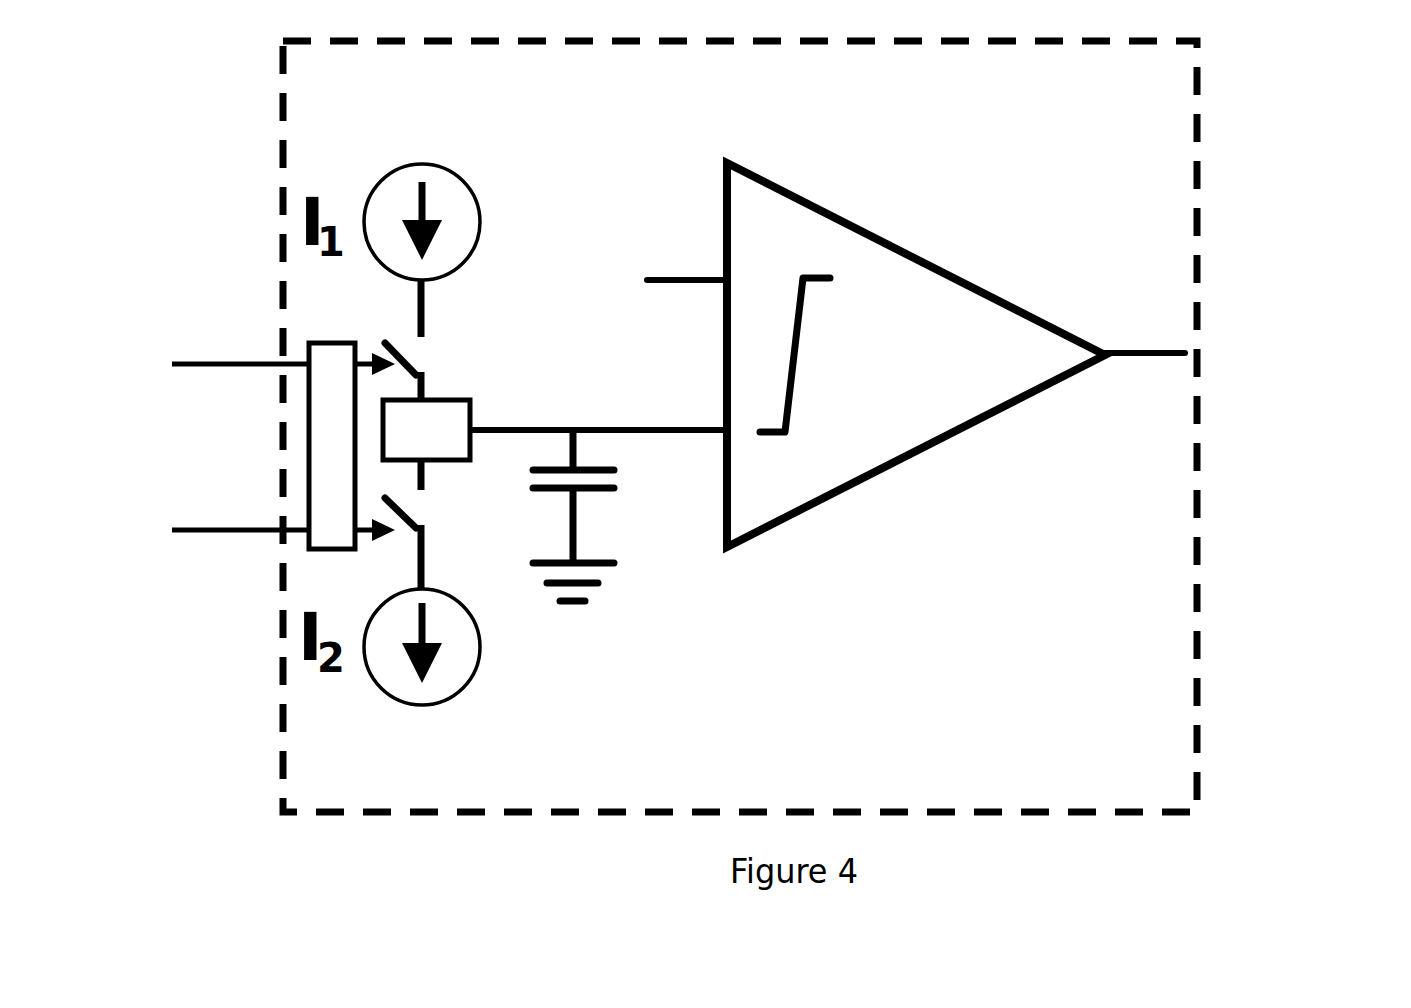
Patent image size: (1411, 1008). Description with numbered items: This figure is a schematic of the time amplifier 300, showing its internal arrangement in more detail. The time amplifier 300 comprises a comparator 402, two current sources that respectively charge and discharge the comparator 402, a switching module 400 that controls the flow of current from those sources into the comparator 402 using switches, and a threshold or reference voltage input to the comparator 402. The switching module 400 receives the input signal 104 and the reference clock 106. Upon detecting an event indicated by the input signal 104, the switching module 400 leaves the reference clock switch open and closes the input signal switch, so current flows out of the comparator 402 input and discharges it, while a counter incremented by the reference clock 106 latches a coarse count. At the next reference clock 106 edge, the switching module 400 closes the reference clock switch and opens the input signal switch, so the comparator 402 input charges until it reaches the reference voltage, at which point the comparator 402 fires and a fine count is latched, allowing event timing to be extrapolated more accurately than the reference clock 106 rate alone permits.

The time amplifier 300 is at (1197, 172).
The comparator 402 is at (923, 262).
The input signal 104 is at (229, 363).
The reference clock 106 is at (214, 552).
The switching module 400 is at (479, 483).